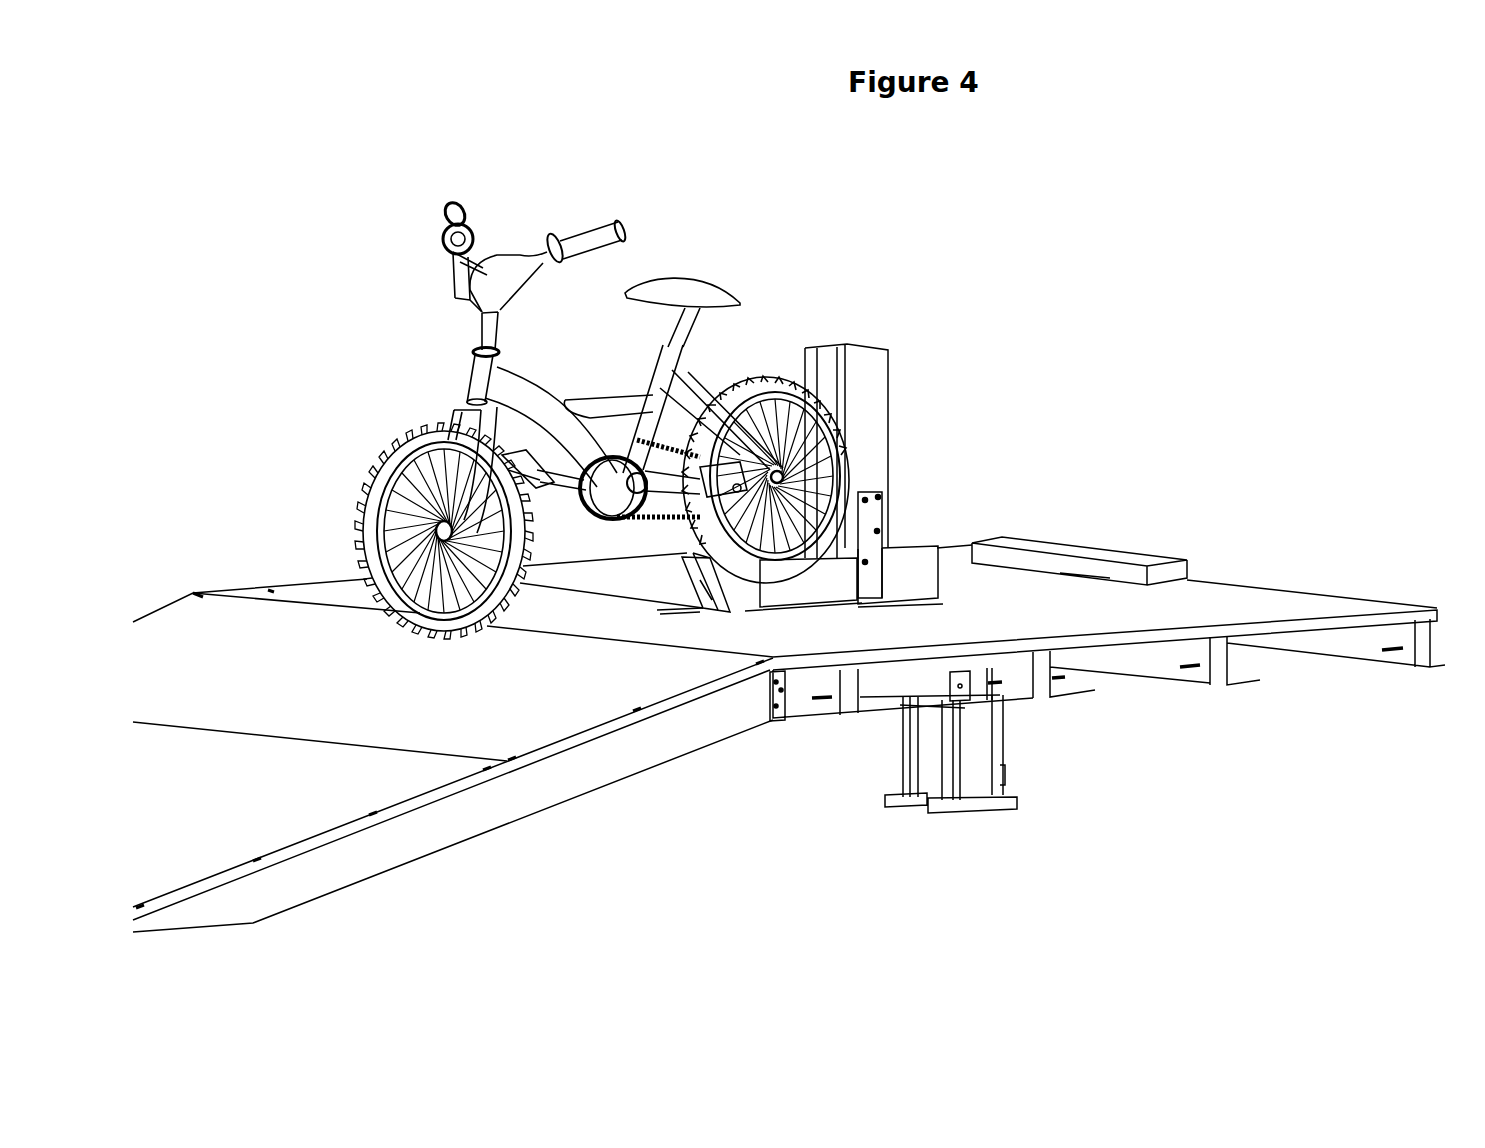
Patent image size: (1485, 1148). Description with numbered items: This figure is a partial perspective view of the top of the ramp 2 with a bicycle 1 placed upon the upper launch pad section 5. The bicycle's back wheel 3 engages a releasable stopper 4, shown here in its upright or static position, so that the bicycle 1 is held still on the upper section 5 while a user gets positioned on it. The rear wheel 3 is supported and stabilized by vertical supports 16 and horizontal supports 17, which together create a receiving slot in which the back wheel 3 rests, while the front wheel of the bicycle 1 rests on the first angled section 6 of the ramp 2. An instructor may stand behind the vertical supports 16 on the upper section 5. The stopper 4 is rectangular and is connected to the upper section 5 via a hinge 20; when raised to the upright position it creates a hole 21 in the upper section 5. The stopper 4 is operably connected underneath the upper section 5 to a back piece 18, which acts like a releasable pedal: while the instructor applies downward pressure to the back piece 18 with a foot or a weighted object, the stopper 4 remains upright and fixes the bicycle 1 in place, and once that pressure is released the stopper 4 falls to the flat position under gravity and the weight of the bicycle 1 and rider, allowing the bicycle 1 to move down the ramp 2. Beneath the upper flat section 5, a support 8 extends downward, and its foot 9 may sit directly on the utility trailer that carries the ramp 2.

The bicycle 1 is at (602, 402).
The ramp 2 is at (266, 542).
The back wheel 3 is at (773, 378).
The releasable stopper 4 is at (712, 578).
The upper section 5 is at (1240, 610).
The first angled section 6 is at (570, 742).
The support 8 is at (978, 757).
The foot 9 is at (985, 807).
The vertical supports 16 is at (827, 353).
The horizontal supports 17 is at (917, 577).
The back piece 18 is at (1103, 550).
The hinge 20 is at (760, 608).
The hole 21 is at (690, 612).